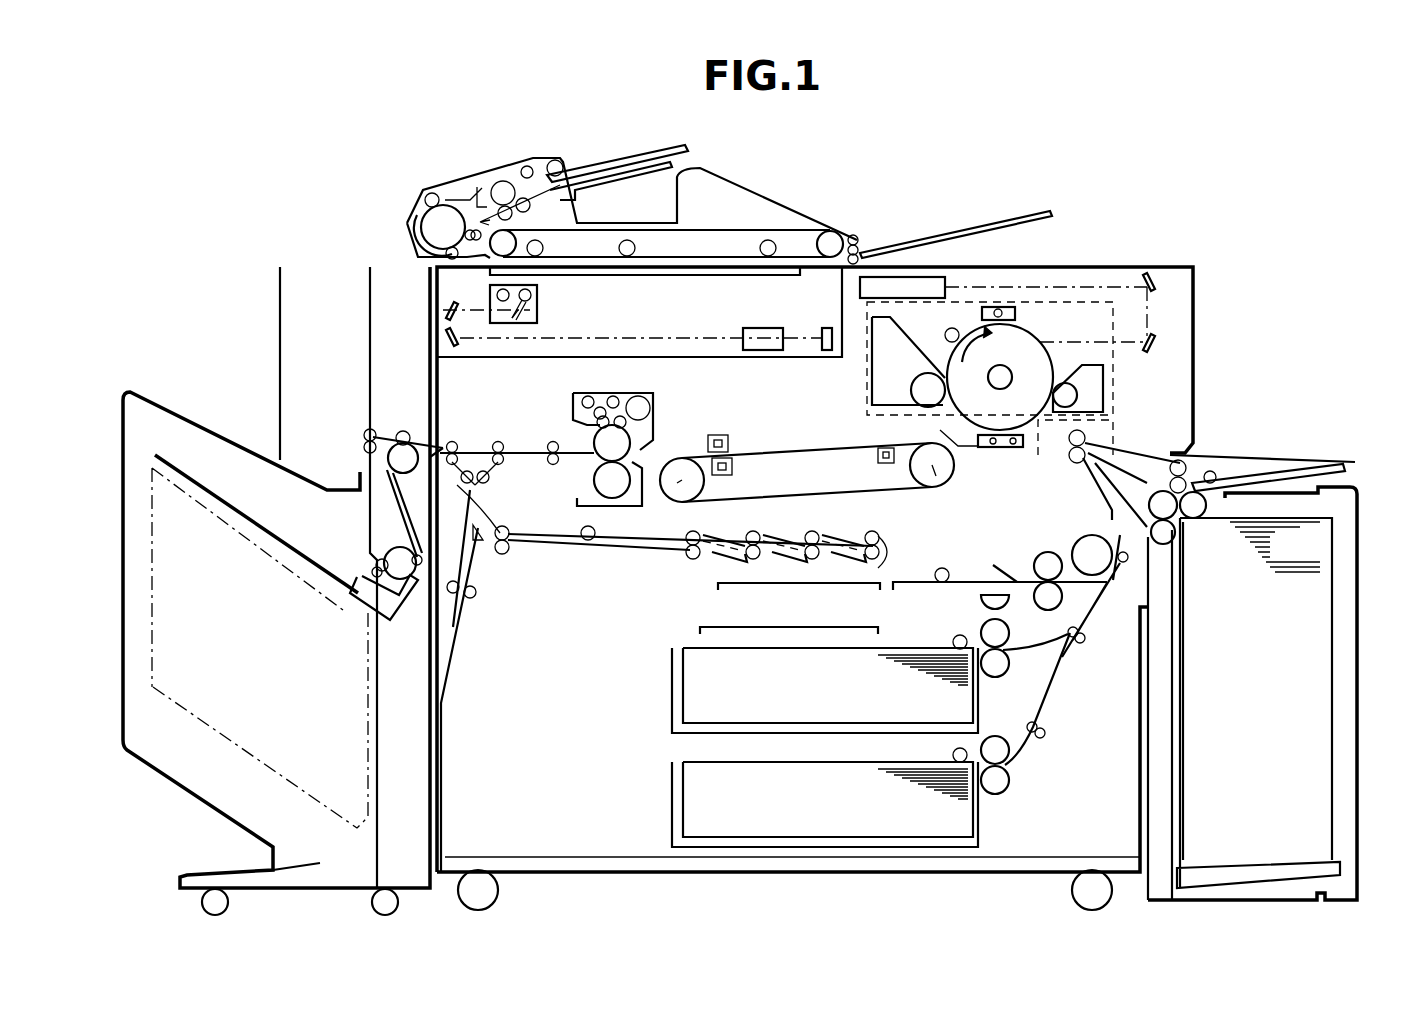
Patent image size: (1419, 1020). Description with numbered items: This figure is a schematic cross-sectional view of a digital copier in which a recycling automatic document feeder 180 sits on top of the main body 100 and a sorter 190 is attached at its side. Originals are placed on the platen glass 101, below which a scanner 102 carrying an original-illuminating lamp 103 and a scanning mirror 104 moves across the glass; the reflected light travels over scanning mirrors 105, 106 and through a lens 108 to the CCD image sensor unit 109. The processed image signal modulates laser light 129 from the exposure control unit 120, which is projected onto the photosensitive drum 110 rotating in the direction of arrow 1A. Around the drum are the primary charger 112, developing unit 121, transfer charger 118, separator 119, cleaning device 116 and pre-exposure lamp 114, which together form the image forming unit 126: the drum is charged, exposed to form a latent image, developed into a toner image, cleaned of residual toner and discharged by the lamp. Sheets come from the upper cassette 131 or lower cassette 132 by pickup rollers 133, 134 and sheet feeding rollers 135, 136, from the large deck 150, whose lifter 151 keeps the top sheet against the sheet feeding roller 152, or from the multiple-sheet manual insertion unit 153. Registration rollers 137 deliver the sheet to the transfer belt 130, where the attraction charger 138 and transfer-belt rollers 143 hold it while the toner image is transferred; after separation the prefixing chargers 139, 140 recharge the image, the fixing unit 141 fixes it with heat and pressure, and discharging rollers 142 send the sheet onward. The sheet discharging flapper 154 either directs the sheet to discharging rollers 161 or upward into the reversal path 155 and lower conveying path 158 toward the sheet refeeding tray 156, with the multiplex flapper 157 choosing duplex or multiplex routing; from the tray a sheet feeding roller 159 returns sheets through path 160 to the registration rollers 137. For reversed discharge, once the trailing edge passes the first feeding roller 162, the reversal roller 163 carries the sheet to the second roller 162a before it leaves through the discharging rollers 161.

The main body 100 is at (1193, 358).
The platen glass 101 is at (652, 272).
The scanner 102 is at (538, 313).
The original-illuminating lamp 103 is at (540, 292).
The scanning mirror 104 is at (517, 318).
The scanning mirror 105 is at (445, 312).
The scanning mirror 106 is at (447, 338).
The lens 108 is at (760, 327).
The CCD sensor (image sensor unit) 109 is at (827, 327).
The photosensitive drum 110 is at (1053, 357).
The primary charger 112 is at (1018, 313).
The pre-exposure lamp 114 is at (942, 332).
The cleaning device 116 is at (870, 376).
The transfer charger 118 is at (1020, 448).
The separator 119 is at (985, 448).
The exposure control unit 120 is at (920, 278).
The developing unit 121 is at (1105, 395).
The image forming unit 126 is at (1117, 323).
The laser light 129 is at (1090, 285).
The transfer belt 130 is at (815, 452).
The upper cassette 131 is at (700, 685).
The lower cassette 132 is at (700, 800).
The pickup roller 133 is at (955, 637).
The pickup roller 134 is at (955, 755).
The sheet feeding roller 135 is at (1000, 675).
The sheet feeding roller 136 is at (1003, 792).
The registration rollers 137 is at (1077, 470).
The attraction charger 138 is at (880, 455).
The prefixing charger 139 is at (725, 433).
The prefixing charger 140 is at (732, 466).
The fixing unit 141 is at (645, 410).
The discharging rollers 142 is at (553, 440).
The transfer-belt rollers 143 is at (677, 483).
The deck 150 is at (1360, 605).
The lifter 151 is at (1340, 868).
The sheet feeding roller 152 is at (1193, 512).
The multiple-sheet manual insertion unit 153 is at (1275, 465).
The sheet discharging flapper 154 is at (498, 430).
The reversal path 155 is at (458, 672).
The sheet refeeding tray 156 is at (913, 578).
The multiplex flapper 157 is at (485, 540).
The lower conveying path 158 is at (790, 578).
The sheet feeding roller 159 is at (1083, 625).
The path 160 is at (1115, 500).
The discharging rollers 161 is at (450, 440).
The first feeding roller 162 is at (488, 480).
The second roller 162a is at (460, 482).
The reversal roller 163 is at (475, 600).
The recycling automatic document feeder (RDF) 180 is at (813, 202).
The sorter 190 is at (280, 300).
The arrow 1A is at (988, 348).